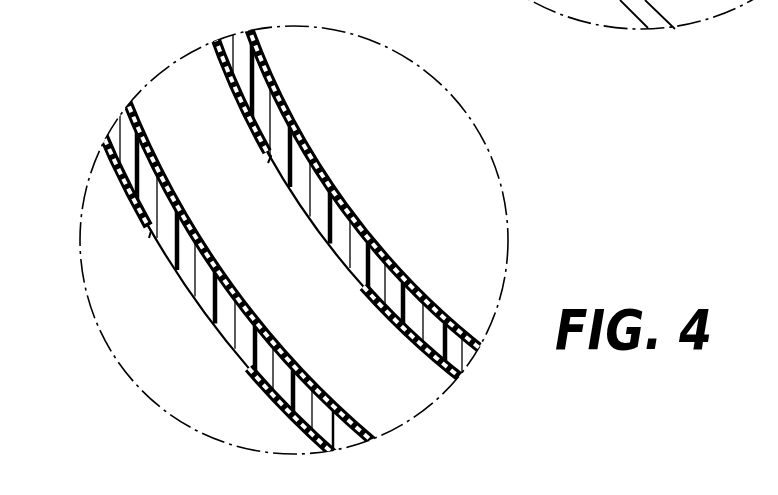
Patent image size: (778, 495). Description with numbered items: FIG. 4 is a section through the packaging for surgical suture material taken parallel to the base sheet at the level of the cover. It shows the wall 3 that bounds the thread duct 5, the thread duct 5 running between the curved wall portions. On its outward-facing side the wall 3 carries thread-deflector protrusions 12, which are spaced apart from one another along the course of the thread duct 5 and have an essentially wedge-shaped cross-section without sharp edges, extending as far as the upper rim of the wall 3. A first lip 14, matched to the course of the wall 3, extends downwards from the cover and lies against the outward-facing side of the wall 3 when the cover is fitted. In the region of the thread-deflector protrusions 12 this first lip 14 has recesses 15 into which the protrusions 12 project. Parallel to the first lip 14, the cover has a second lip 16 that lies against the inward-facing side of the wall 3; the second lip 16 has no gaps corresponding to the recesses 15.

The wall 3 is at (172, 261).
The thread duct 5 is at (298, 287).
The thread-deflector protrusions 12 is at (288, 180).
The first lip 14 is at (240, 107).
The recesses 15 is at (268, 150).
The second lip 16 is at (293, 131).